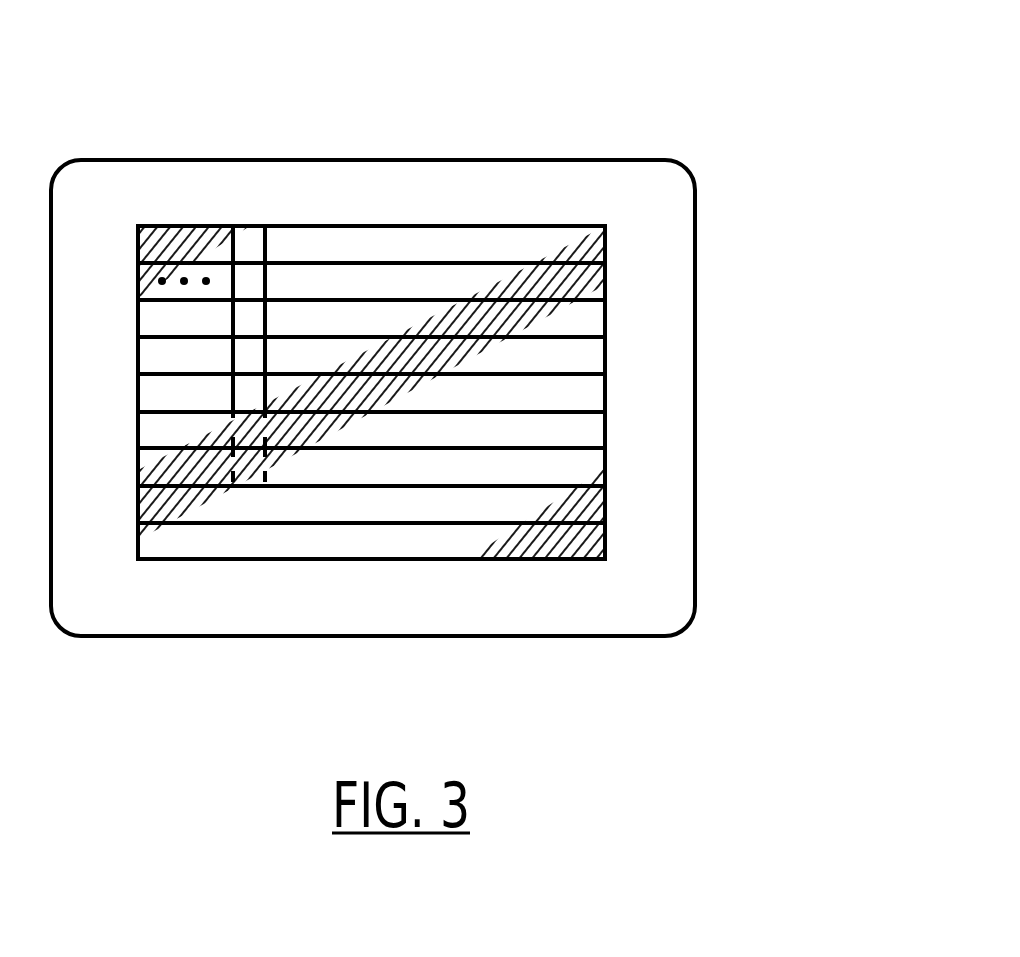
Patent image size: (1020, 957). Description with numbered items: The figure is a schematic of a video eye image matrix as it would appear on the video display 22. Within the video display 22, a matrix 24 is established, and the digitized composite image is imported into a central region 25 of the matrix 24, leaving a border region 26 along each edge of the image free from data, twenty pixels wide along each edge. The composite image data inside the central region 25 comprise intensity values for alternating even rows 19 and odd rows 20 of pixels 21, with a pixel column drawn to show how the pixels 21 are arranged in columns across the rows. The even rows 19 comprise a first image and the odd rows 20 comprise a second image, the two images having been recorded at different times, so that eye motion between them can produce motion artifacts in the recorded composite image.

The even rows 19 is at (555, 411).
The odd rows 20 is at (582, 373).
The pixels 21 is at (253, 240).
The video display 22 is at (148, 160).
The matrix 24 is at (620, 517).
The central region 25 is at (575, 322).
The border region 26 is at (203, 209).